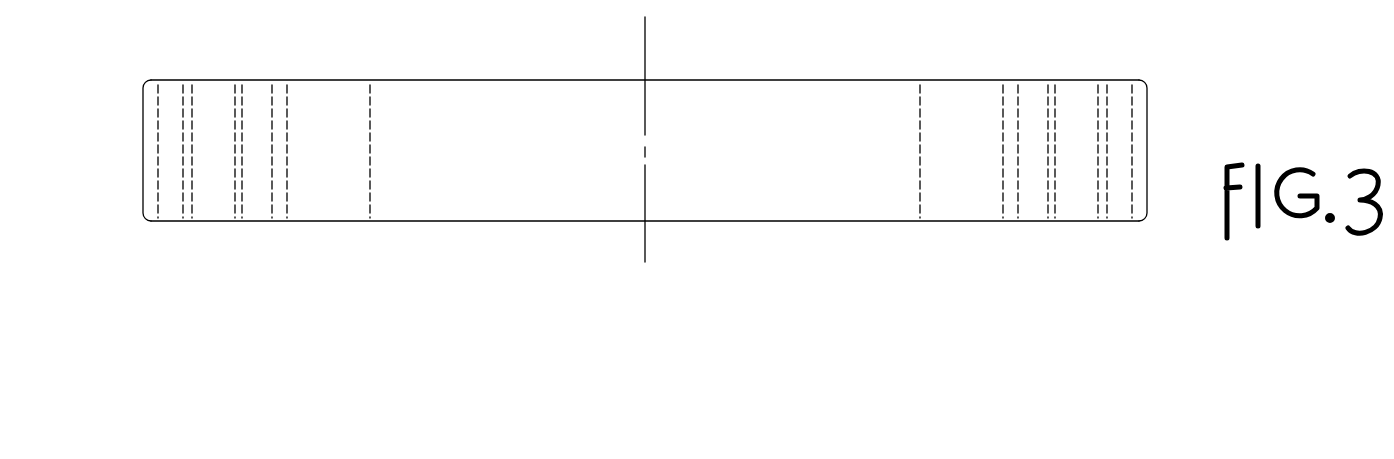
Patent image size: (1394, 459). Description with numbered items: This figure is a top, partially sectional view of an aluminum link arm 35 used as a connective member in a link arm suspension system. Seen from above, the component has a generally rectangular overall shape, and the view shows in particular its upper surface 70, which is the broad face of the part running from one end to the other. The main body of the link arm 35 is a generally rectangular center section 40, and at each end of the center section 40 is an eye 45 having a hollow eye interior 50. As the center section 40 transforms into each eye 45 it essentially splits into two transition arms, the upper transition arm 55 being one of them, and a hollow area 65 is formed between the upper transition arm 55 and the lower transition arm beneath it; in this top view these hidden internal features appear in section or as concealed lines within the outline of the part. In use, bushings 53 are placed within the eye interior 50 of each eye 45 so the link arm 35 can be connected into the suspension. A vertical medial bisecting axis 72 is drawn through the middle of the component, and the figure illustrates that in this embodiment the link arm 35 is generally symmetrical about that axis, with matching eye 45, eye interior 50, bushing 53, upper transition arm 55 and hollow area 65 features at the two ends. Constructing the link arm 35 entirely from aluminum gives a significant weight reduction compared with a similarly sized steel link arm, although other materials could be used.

The link arm 35 is at (541, 235).
The center section 40 is at (592, 98).
The eye 45 is at (152, 88).
The eye interior 50 is at (212, 99).
The bushing 53 is at (170, 202).
The upper transition arm 55 is at (298, 200).
The hollow area 65 is at (331, 95).
The upper surface 70 is at (720, 200).
The medial bisecting axis 72 is at (648, 44).